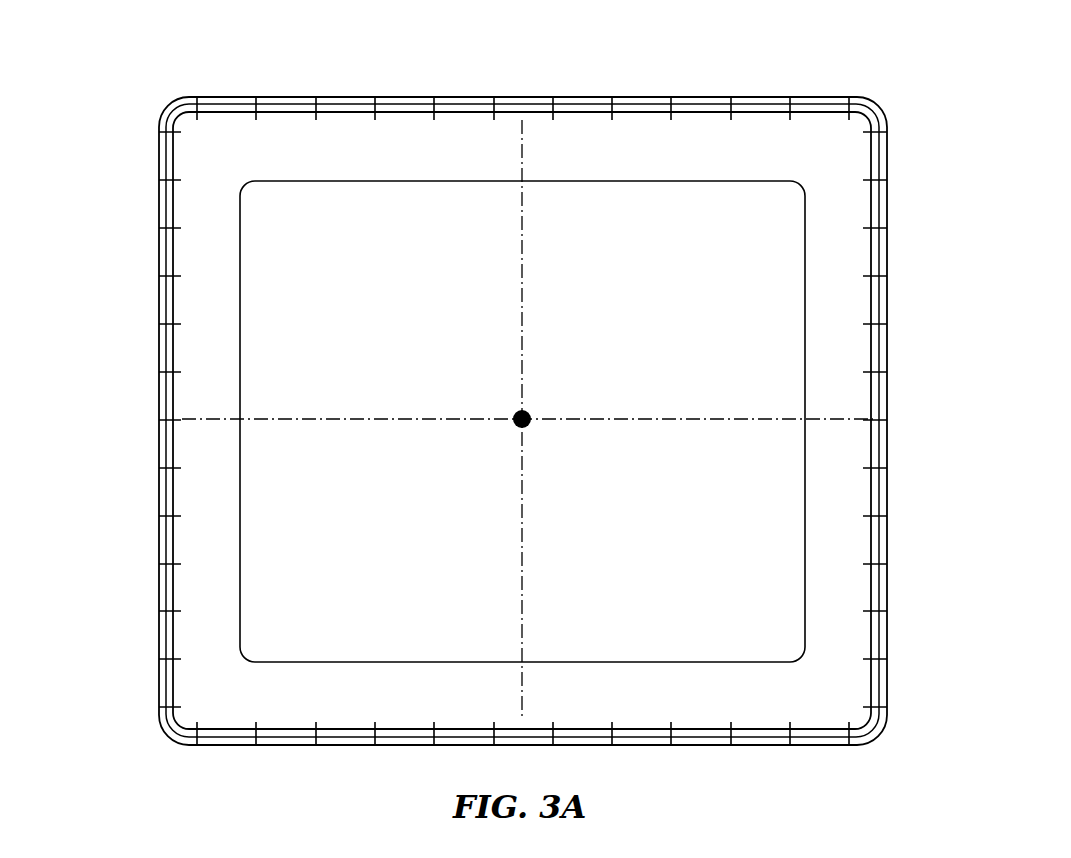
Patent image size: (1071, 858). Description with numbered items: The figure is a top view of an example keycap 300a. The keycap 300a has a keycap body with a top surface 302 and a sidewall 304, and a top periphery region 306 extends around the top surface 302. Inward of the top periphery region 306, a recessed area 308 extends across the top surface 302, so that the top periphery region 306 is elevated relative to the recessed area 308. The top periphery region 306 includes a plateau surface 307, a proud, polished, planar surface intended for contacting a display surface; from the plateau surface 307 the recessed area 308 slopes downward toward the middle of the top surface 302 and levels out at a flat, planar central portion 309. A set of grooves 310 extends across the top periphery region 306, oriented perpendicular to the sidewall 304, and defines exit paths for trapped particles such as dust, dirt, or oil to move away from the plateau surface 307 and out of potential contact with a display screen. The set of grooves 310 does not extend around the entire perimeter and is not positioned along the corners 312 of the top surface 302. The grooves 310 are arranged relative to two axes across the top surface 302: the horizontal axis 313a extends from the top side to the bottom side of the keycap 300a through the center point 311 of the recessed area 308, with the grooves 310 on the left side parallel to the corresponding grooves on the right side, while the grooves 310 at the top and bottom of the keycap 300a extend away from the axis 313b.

The keycap 300a is at (176, 56).
The top surface 302 is at (830, 220).
The sidewall 304 is at (896, 447).
The top periphery region 306 is at (166, 257).
The plateau surface 307 is at (172, 165).
The recessed area 308 is at (670, 162).
The central portion 309 is at (412, 181).
The set of grooves 310 is at (178, 466).
The center point 311 is at (528, 411).
The corners 312 is at (175, 110).
The horizontal axis 313a is at (525, 312).
The horizontal axis 313b is at (690, 415).